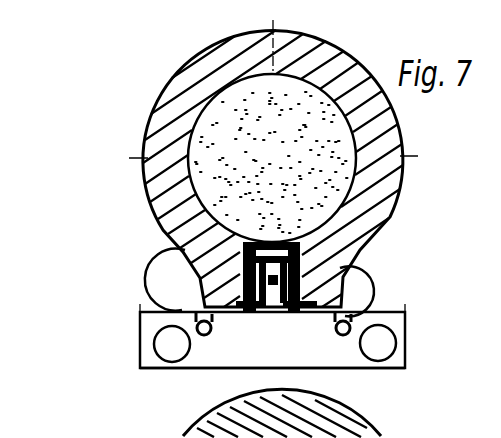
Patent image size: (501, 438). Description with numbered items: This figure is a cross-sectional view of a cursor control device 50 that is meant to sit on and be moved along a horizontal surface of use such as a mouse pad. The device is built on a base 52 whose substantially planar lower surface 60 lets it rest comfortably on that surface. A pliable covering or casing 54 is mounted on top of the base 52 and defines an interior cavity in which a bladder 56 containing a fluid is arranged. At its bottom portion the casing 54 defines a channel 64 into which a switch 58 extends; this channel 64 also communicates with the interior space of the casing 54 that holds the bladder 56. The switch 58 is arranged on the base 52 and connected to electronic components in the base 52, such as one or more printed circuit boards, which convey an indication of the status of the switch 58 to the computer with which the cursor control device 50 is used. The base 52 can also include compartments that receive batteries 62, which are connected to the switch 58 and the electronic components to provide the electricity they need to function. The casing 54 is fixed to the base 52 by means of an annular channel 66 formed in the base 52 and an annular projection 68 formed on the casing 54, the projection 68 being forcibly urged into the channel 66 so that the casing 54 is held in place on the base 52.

The cursor control device 50 is at (118, 276).
The base 52 is at (140, 347).
The pliable covering or casing 54 is at (386, 193).
The bladder 56 is at (333, 170).
The switch 58 is at (348, 295).
The lower surface 60 is at (162, 370).
The batteries 62 is at (173, 352).
The channel 64 is at (167, 242).
The annular channel 66 is at (172, 312).
The annular projection 68 is at (197, 315).